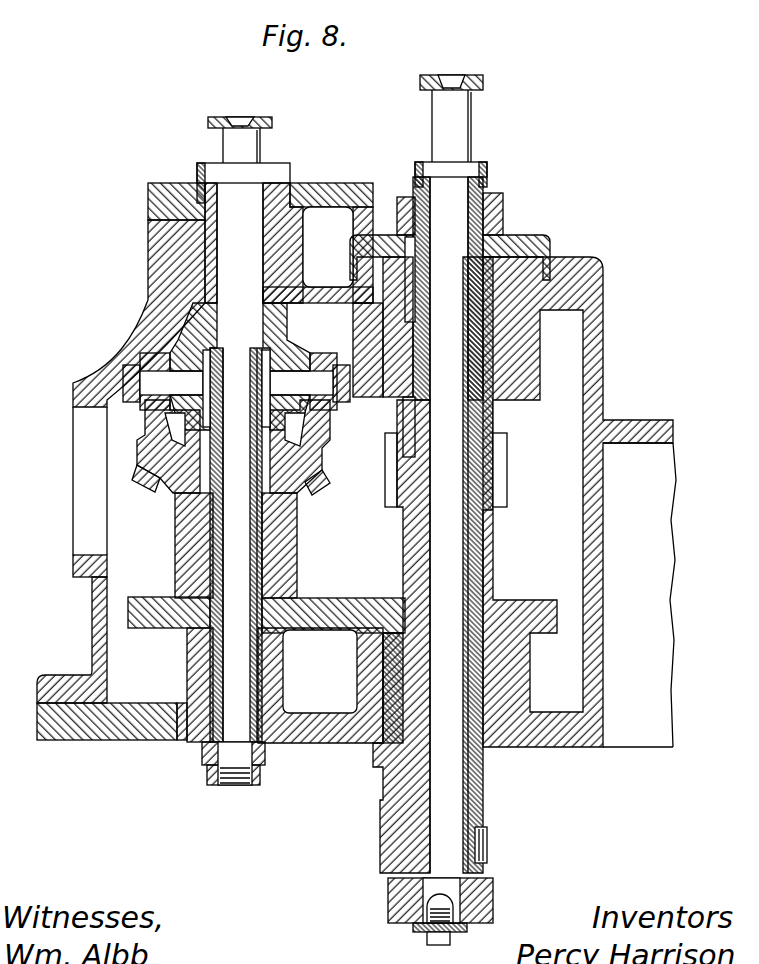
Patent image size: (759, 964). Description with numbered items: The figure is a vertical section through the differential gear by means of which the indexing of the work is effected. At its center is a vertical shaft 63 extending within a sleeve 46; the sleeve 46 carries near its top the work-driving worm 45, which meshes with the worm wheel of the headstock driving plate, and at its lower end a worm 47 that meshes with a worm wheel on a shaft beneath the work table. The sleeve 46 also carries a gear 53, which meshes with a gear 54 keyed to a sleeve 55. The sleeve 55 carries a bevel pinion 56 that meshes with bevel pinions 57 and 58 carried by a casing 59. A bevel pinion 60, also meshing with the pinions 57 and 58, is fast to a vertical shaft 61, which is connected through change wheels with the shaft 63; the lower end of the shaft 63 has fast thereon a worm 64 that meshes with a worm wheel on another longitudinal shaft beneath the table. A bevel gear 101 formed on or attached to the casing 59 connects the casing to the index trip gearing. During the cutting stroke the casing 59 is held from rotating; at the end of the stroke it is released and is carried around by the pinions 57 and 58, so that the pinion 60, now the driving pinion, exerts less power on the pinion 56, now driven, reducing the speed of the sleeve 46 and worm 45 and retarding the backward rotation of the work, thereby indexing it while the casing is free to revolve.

The worm 45 is at (505, 478).
The sleeve 46 is at (480, 576).
The worm 47 is at (495, 852).
The gear 53 is at (535, 606).
The gear 54 is at (307, 606).
The sleeve 55 is at (270, 545).
The bevel pinion 56 is at (180, 440).
The bevel pinion 57 is at (165, 415).
The bevel pinion 58 is at (330, 421).
The casing 59 is at (145, 475).
The bevel pinion 60 is at (283, 316).
The vertical shaft 61 is at (252, 149).
The vertical shaft 63 is at (437, 125).
The worm 64 is at (497, 909).
The bevel gear 101 is at (147, 493).